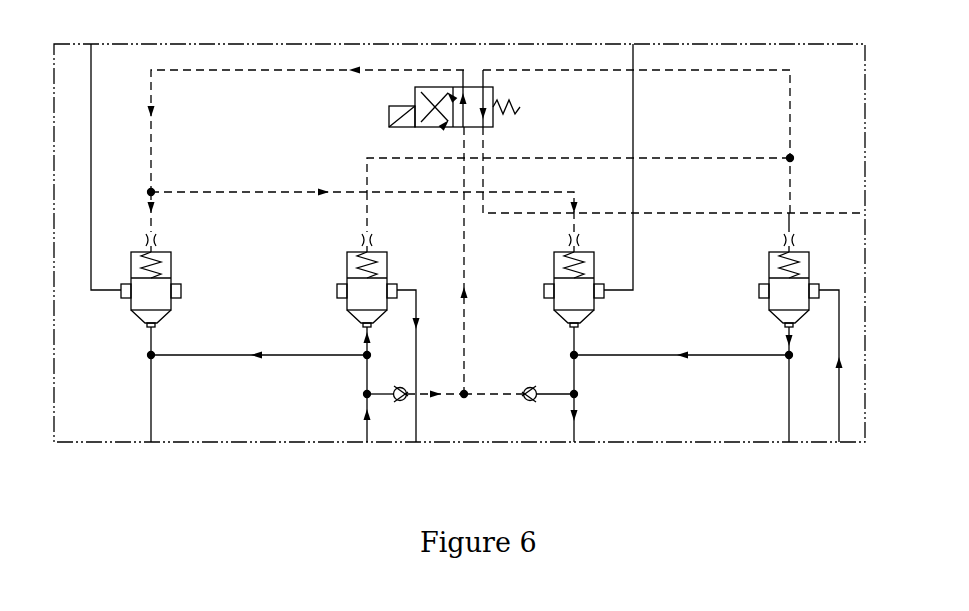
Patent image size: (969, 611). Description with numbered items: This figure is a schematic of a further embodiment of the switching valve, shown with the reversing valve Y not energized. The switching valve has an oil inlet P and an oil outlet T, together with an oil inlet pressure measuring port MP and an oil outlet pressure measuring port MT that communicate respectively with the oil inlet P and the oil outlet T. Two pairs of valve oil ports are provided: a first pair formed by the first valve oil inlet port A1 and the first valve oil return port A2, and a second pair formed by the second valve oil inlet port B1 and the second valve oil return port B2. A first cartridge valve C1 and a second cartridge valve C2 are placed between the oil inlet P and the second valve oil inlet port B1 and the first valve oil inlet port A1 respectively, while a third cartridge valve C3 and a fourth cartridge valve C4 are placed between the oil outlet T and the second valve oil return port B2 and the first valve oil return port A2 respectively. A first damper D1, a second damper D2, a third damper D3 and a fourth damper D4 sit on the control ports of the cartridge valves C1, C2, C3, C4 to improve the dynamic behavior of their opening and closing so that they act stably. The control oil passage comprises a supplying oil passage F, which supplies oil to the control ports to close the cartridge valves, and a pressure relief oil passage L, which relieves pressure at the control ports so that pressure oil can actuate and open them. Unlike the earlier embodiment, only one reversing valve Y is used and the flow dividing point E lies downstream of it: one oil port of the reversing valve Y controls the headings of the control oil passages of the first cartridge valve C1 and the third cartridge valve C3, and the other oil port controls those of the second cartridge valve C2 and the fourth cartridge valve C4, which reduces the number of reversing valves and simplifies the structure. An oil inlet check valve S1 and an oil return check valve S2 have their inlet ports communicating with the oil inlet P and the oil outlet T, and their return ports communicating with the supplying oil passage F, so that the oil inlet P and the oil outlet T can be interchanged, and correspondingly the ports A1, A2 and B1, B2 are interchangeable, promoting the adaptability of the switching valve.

The second valve oil inlet port B1 is at (100, 156).
The second valve oil return port B2 is at (625, 156).
The reversing valve Y is at (462, 100).
The flow dividing point E is at (468, 150).
The pressure relief oil passage L is at (682, 176).
The supplying oil passage F is at (471, 260).
The first damper D1 is at (162, 219).
The second damper D2 is at (379, 219).
The third damper D3 is at (586, 236).
The fourth damper D4 is at (801, 229).
The first cartridge valve C1 is at (166, 300).
The second cartridge valve C2 is at (383, 300).
The third cartridge valve C3 is at (590, 300).
The fourth cartridge valve C4 is at (805, 300).
The oil inlet pressure measuring port MP is at (251, 414).
The oil inlet P is at (361, 413).
The first valve oil inlet port A1 is at (412, 382).
The oil inlet check valve S1 is at (417, 384).
The oil return check valve S2 is at (519, 384).
The oil outlet T is at (573, 413).
The oil outlet pressure measuring port MT is at (689, 414).
The first valve oil return port A2 is at (835, 382).